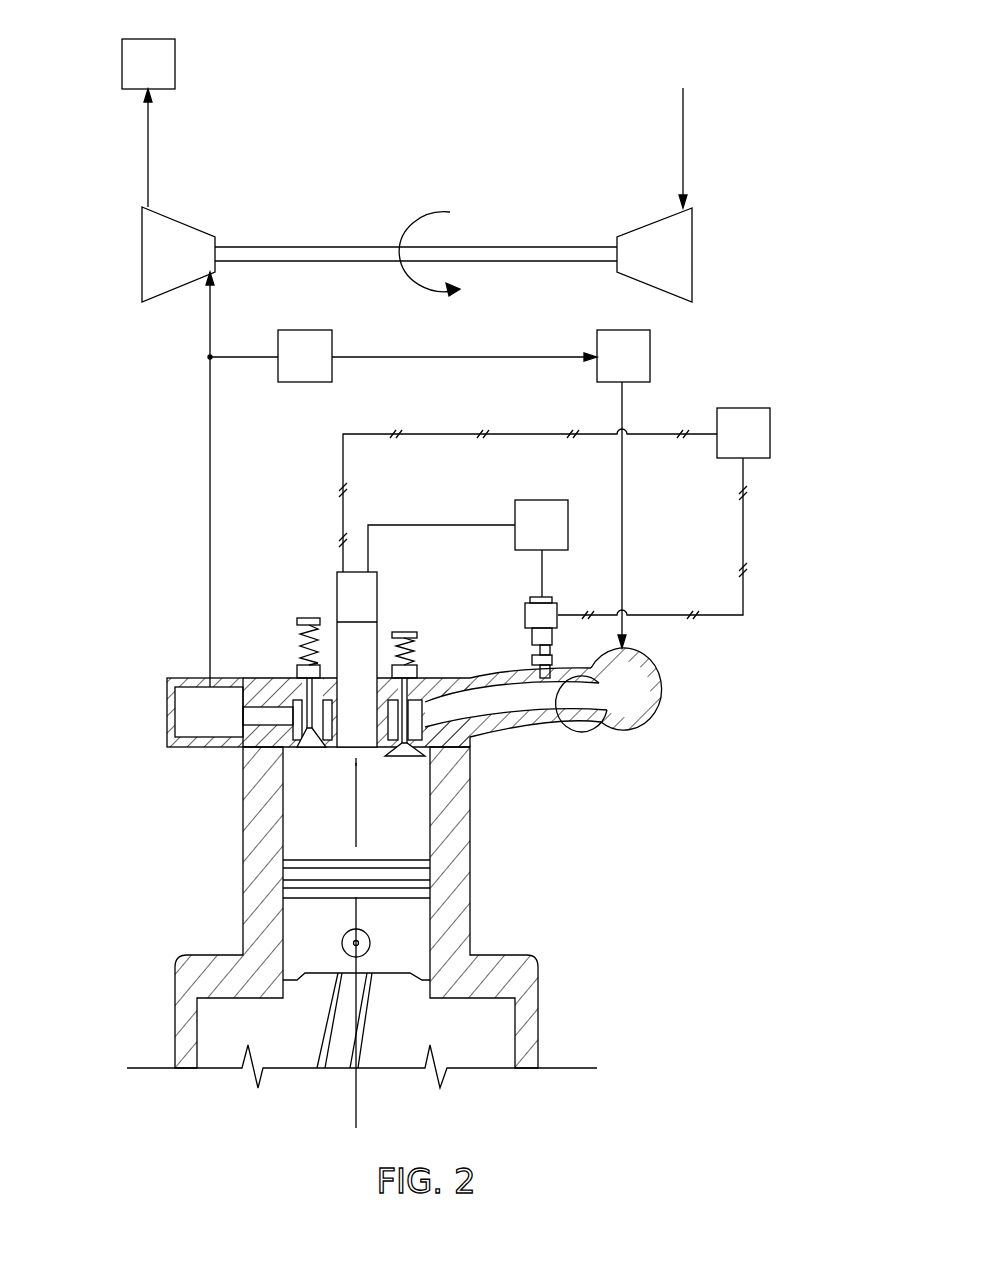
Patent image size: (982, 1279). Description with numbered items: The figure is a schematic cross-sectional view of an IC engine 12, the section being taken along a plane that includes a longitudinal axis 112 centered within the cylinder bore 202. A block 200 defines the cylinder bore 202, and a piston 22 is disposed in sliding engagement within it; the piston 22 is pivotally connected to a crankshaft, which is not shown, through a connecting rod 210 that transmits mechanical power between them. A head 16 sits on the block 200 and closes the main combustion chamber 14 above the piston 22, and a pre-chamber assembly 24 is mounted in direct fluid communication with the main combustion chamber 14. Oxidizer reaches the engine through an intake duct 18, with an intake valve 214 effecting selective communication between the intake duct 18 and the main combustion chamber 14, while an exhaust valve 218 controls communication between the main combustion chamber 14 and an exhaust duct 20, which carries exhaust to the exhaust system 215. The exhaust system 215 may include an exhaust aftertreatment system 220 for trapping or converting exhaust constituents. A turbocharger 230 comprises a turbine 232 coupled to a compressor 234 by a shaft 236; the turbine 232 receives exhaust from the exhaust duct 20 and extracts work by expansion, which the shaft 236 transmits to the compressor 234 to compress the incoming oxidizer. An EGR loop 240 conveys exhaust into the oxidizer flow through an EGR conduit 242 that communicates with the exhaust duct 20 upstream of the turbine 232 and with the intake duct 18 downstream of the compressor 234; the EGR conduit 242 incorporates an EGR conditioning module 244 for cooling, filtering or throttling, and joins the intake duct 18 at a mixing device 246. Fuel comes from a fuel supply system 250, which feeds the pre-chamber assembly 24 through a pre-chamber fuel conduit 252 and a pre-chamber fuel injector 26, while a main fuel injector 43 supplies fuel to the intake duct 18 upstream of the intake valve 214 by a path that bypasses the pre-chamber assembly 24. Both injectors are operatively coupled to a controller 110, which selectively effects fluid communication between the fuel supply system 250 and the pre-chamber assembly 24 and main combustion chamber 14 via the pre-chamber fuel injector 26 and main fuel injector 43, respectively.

The IC engine 12 is at (708, 52).
The main combustion chamber 14 is at (383, 803).
The head 16 is at (472, 737).
The intake duct 18 is at (652, 715).
The exhaust duct 20 is at (148, 133).
The piston 22 is at (385, 933).
The pre-chamber assembly 24 is at (365, 642).
The pre-chamber fuel injector 26 is at (377, 583).
The main fuel injector 43 is at (527, 615).
The controller 110 is at (731, 446).
The longitudinal axis 112 is at (358, 1108).
The block 200 is at (362, 937).
The cylinder bore 202 is at (283, 822).
The connecting rod 210 is at (368, 1018).
The intake valve 214 is at (427, 690).
The exhaust system 215 is at (370, 204).
The exhaust valve 218 is at (298, 690).
The exhaust aftertreatment system 220 is at (136, 76).
The turbocharger 230 is at (417, 204).
The turbine 232 is at (156, 268).
The compressor 234 is at (643, 268).
The shaft 236 is at (537, 247).
The EGR loop 240 is at (430, 470).
The EGR conduit 242 is at (397, 360).
The EGR conditioning module 244 is at (293, 369).
The mixing device 246 is at (611, 369).
The fuel supply system 250 is at (529, 538).
The pre-chamber fuel conduit 252 is at (436, 525).